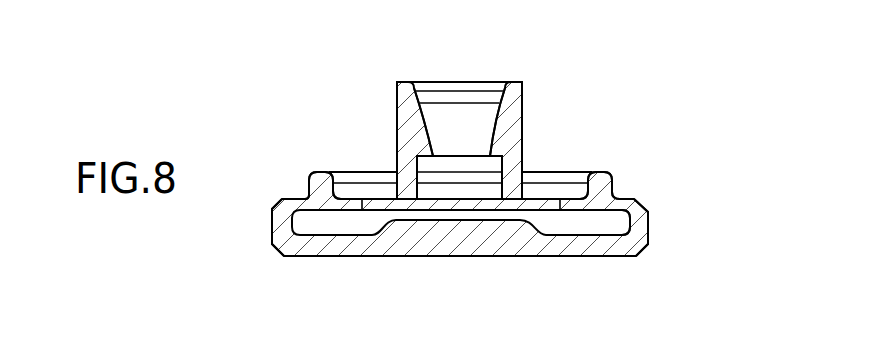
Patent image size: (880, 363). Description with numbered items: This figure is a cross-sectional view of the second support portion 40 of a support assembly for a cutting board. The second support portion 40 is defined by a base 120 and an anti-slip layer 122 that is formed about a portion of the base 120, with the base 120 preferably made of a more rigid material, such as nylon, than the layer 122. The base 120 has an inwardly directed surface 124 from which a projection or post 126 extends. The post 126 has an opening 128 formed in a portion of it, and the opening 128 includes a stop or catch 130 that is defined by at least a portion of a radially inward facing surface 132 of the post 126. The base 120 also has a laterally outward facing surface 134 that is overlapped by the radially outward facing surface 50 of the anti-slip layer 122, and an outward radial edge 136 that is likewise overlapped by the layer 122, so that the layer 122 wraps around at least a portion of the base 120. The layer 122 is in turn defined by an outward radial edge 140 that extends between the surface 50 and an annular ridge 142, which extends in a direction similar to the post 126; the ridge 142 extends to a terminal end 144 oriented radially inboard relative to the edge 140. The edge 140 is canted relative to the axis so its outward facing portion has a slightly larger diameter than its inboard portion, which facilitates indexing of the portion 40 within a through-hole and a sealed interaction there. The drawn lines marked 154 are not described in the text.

The second support portion 40 is at (609, 56).
The exposed end portion 50 is at (447, 256).
The base 120 is at (513, 130).
The anti-slip layer 122 is at (308, 248).
The inwardly directed surface 124 is at (541, 197).
The post 126 is at (402, 128).
The opening 128 is at (495, 56).
The catch 130 is at (498, 160).
The radially inward facing surface 132 is at (490, 148).
The laterally outward facing surface 134 is at (553, 233).
The outward radial edge 136 is at (633, 221).
The outward radial edge 140 is at (649, 228).
The annular ridge 142 is at (613, 187).
The terminal end 144 is at (322, 177).
The tapered inner surfaces 154 is at (495, 122).